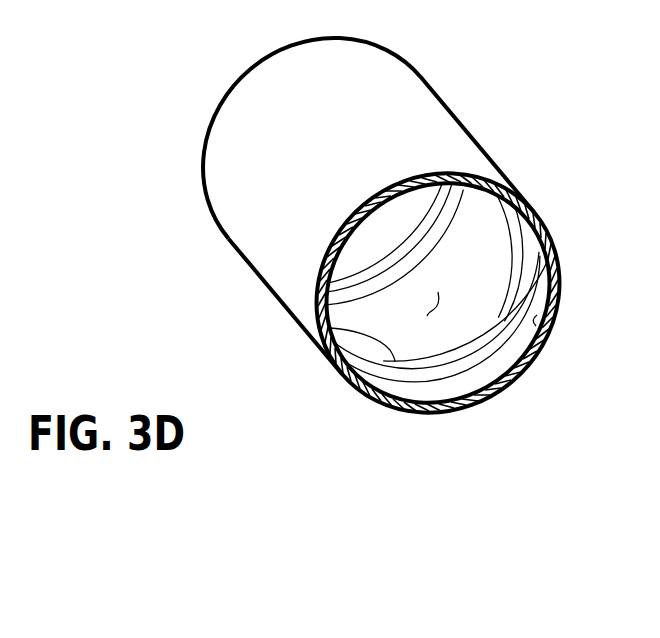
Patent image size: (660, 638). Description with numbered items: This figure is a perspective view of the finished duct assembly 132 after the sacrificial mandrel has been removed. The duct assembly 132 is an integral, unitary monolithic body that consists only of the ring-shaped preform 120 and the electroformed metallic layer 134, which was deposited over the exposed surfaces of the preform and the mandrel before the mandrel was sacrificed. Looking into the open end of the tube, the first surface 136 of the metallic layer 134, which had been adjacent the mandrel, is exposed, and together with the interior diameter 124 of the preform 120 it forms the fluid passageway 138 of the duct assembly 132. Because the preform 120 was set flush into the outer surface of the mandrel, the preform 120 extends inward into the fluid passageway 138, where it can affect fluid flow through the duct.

The duct assembly 132 is at (455, 108).
The metallic layer 134 is at (327, 262).
The first surface 136 is at (543, 333).
The preform 120 is at (466, 369).
The interior diameter 124 is at (337, 330).
The fluid passageway 138 is at (430, 313).